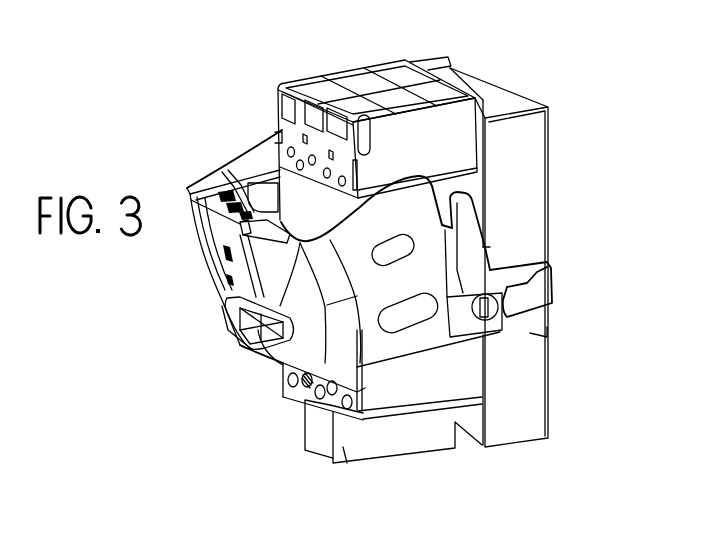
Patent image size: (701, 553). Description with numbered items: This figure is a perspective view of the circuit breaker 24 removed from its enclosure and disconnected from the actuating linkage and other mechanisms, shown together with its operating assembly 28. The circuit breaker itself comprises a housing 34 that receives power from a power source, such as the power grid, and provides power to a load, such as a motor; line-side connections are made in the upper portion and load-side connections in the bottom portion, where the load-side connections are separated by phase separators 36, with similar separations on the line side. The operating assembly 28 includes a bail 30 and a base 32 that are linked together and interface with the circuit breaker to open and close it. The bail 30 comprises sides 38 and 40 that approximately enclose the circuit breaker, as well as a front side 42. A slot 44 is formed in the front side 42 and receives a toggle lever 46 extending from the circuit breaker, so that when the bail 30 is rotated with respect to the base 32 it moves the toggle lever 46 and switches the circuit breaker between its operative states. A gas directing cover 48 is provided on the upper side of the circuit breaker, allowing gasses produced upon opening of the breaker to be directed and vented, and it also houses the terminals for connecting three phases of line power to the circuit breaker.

The circuit breaker 24 is at (462, 182).
The operating assembly 28 is at (242, 361).
The bail 30 is at (222, 284).
The base 32 is at (523, 224).
The housing 34 is at (462, 381).
The phase separators 36 is at (318, 433).
The side 38 is at (412, 343).
The side 40 is at (256, 150).
The front side 42 is at (222, 306).
The slot 44 is at (262, 332).
The toggle lever 46 is at (250, 339).
The gas directing cover 48 is at (421, 132).